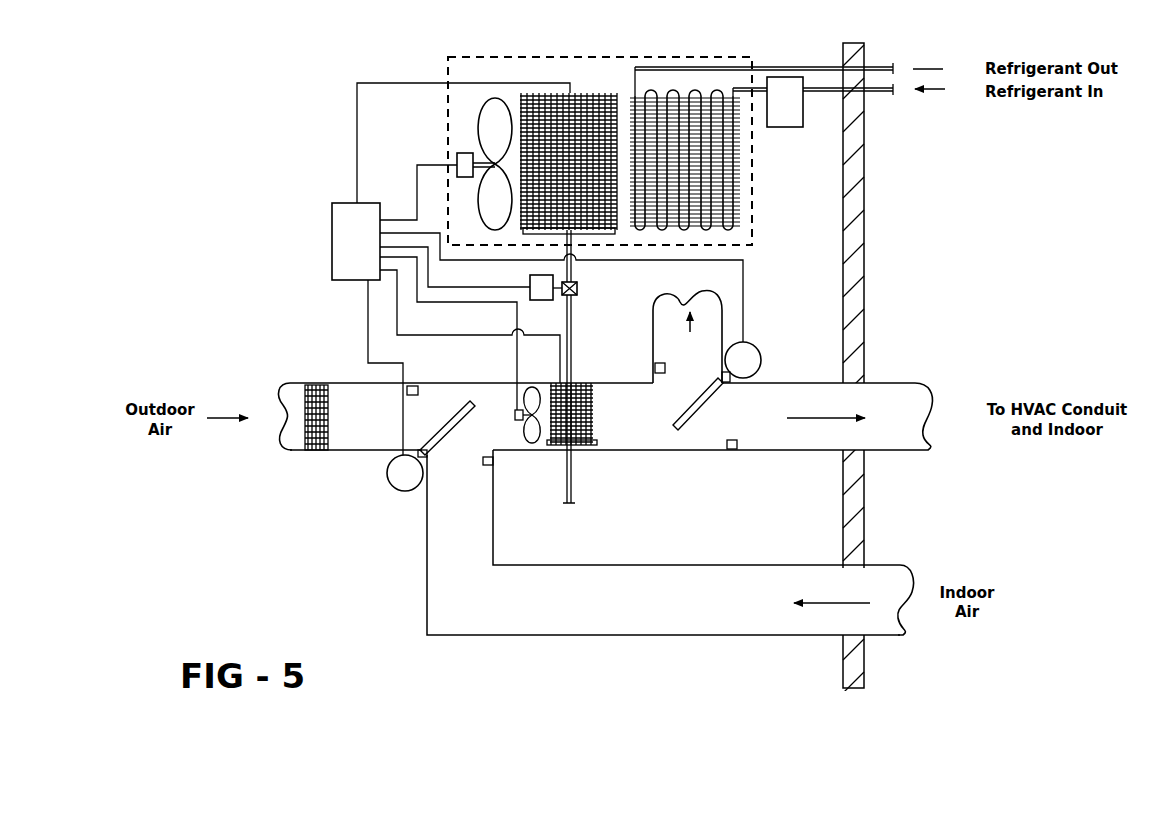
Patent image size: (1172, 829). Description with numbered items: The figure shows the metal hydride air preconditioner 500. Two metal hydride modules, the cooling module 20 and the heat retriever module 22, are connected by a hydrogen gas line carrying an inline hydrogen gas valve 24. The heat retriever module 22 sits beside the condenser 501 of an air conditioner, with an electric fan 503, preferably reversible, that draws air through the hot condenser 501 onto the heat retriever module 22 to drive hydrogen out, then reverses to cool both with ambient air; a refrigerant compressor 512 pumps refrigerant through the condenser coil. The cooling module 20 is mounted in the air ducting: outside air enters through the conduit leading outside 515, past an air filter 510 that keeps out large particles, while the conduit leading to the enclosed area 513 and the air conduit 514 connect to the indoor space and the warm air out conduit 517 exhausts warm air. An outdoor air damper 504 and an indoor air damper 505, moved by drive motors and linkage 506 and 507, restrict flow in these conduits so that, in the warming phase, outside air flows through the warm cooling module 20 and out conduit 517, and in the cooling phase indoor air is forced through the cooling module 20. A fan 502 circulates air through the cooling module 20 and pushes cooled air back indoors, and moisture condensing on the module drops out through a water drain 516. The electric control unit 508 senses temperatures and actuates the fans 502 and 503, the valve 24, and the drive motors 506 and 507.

The metal hydride air preconditioner 500 is at (246, 90).
The heat retriever module 22 is at (580, 93).
The condenser 501 is at (690, 103).
The refrigerant compressor 512 is at (782, 95).
The electric fan 503 is at (497, 120).
The electric control unit 508 is at (337, 210).
The inline hydrogen gas valve 24 is at (578, 290).
The water drain 516 is at (573, 487).
The conduit leading outside 515 is at (378, 426).
The conduit leading to the enclosed area 513 is at (655, 428).
The air conduit to the enclosed area 514 is at (741, 612).
The warm air out conduit 517 is at (707, 356).
The air filter 510 is at (315, 383).
The outdoor air damper 504 is at (462, 410).
The drive motor and linkage 506 is at (405, 473).
The cooling module 20 is at (572, 383).
The fan 502 is at (530, 447).
The indoor air damper 505 is at (697, 413).
The drive motor and linkage 507 is at (748, 352).